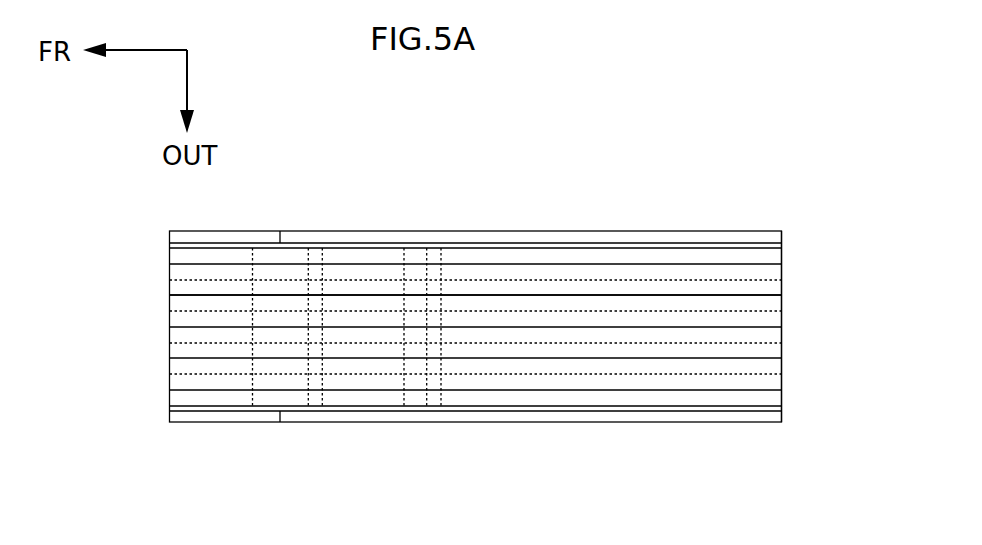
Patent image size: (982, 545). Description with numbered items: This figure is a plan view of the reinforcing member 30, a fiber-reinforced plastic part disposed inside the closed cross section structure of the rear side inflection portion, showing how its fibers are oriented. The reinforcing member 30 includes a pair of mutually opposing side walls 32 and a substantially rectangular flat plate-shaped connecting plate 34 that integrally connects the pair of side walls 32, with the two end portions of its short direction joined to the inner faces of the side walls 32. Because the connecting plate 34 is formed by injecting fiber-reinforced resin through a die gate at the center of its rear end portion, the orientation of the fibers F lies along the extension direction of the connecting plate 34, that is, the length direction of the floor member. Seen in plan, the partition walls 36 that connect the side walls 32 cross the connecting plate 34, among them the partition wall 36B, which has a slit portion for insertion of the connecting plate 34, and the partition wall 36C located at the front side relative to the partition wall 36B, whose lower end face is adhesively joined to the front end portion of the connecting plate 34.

The reinforcing member 30 is at (308, 215).
The side wall 32 is at (500, 229).
The connecting plate 34 is at (782, 318).
The partition wall 36 is at (378, 375).
The partition wall 36B is at (417, 368).
The partition wall 36C is at (287, 352).
The fibers F is at (575, 295).